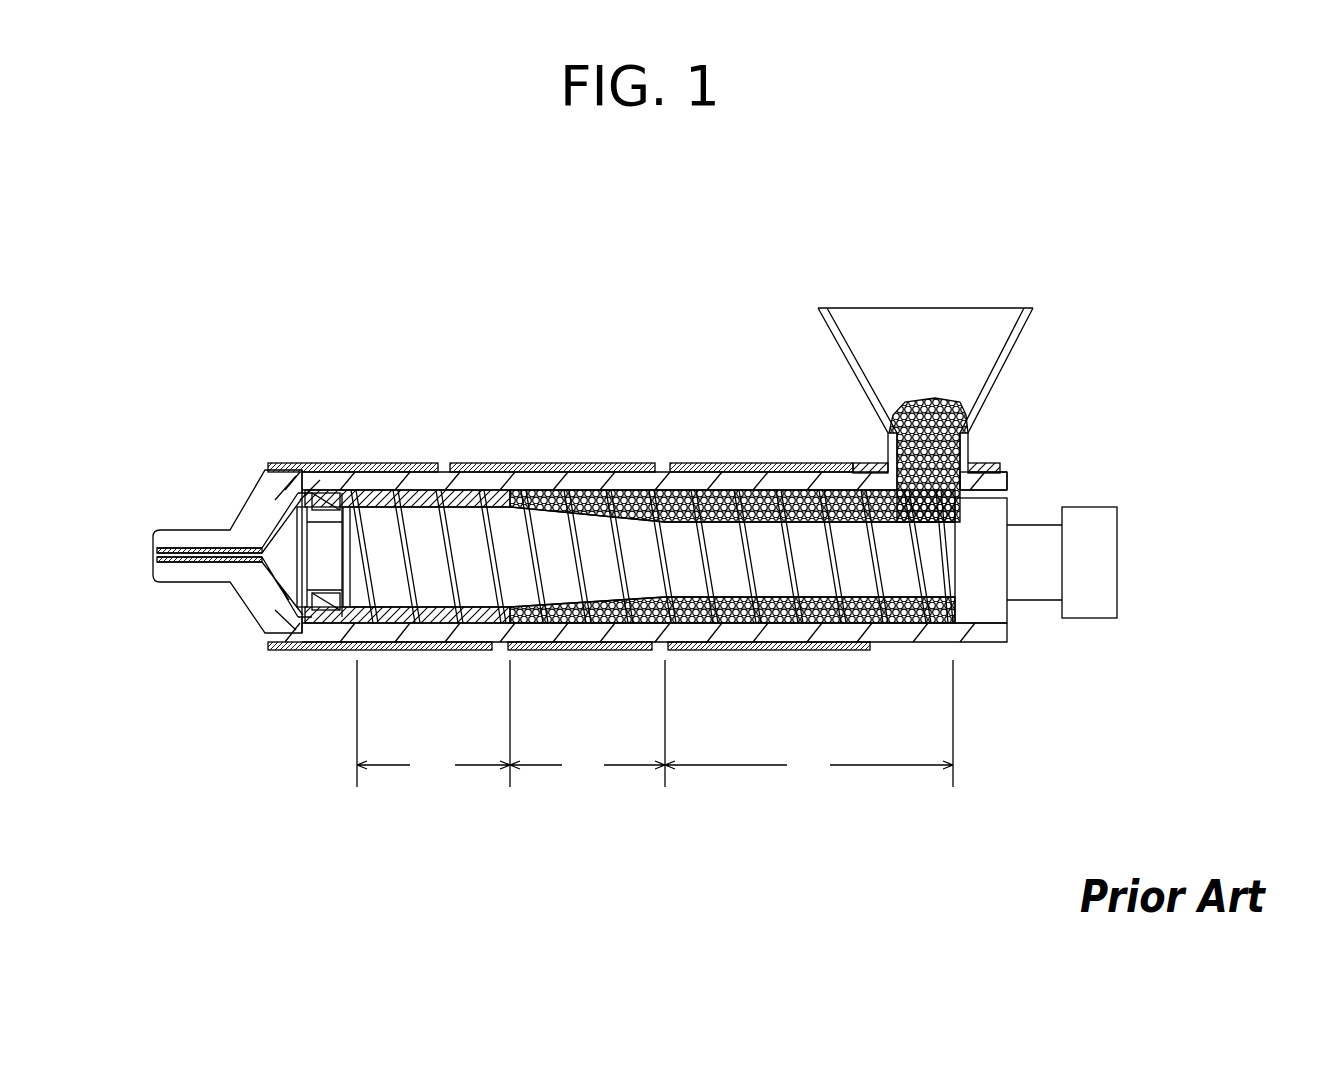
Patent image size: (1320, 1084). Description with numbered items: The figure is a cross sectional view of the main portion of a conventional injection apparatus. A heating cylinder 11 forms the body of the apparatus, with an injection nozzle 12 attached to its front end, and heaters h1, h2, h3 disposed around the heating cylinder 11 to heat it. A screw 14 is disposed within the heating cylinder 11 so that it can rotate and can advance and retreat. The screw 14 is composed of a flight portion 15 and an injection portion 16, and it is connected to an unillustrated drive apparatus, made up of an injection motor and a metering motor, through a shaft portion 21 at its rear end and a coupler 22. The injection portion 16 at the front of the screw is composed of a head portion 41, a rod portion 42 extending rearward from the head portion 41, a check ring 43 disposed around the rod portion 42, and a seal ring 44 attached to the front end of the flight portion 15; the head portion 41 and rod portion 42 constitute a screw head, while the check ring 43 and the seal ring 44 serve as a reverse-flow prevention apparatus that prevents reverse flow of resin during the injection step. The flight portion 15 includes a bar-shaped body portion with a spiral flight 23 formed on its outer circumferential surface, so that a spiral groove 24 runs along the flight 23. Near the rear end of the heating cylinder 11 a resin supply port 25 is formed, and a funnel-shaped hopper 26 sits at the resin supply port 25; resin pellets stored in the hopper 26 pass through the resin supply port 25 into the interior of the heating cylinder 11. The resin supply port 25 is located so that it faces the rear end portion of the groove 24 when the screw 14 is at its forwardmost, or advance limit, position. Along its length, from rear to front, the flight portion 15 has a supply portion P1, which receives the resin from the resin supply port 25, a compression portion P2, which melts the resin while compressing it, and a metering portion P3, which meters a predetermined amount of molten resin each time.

The heating cylinder 11 is at (393, 472).
The injection nozzle 12 is at (193, 540).
The screw 14 is at (652, 610).
The flight portion 15 is at (630, 538).
The injection portion 16 is at (252, 642).
The shaft portion 21 is at (985, 630).
The coupler 22 is at (1095, 608).
The spiral flight 23 is at (608, 624).
The spiral groove 24 is at (576, 624).
The resin supply port 25 is at (958, 492).
The hopper 26 is at (903, 307).
The head portion 41 is at (262, 600).
The rod portion 42 is at (287, 562).
The check ring 43 is at (318, 567).
The seal ring 44 is at (331, 619).
The heater h1 is at (313, 462).
The heater h2 is at (520, 462).
The heater h3 is at (707, 462).
The supply portion P1 is at (809, 723).
The compression portion P2 is at (587, 723).
The metering portion P3 is at (433, 723).